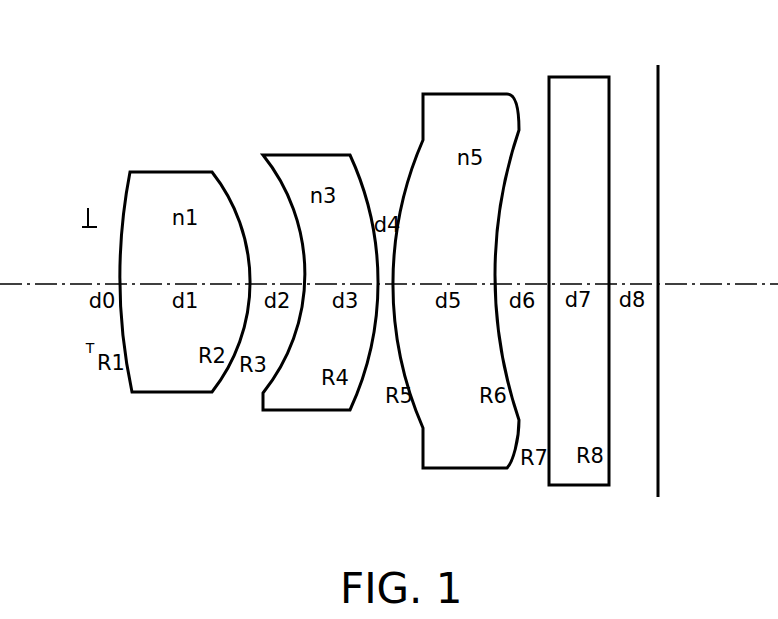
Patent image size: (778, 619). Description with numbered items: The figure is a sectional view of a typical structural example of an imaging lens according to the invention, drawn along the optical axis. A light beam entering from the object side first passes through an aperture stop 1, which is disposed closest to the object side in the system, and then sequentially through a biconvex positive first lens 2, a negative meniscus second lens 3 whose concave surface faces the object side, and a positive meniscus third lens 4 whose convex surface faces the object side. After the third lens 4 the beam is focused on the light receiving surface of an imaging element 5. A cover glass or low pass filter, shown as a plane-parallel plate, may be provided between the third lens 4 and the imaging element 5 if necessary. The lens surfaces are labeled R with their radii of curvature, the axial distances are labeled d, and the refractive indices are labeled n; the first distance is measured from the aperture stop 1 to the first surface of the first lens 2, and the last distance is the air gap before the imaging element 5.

The aperture stop 1 is at (88, 210).
The first lens 2 is at (190, 190).
The second lens 3 is at (325, 172).
The third lens 4 is at (468, 123).
The imaging element 5 is at (658, 133).